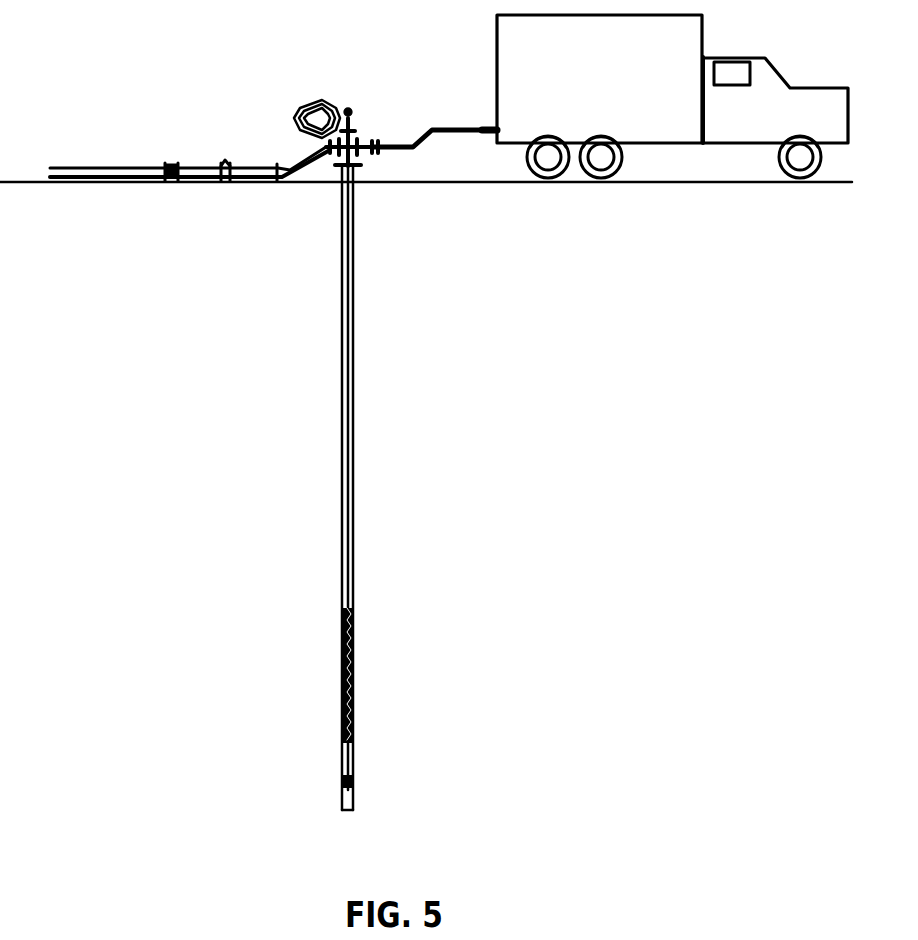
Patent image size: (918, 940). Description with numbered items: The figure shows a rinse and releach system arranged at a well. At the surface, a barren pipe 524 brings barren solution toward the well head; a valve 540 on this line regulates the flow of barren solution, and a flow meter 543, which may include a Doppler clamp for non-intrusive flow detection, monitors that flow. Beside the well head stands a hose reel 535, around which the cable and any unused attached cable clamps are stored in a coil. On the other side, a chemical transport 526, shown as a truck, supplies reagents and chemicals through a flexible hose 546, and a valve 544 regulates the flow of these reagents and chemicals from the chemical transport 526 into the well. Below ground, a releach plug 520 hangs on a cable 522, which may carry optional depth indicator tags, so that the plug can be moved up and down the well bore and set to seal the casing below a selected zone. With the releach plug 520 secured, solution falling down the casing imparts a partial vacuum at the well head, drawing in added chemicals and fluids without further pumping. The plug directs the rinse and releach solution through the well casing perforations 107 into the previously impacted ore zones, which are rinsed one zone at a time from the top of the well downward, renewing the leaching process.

The barren pipe 524 is at (98, 167).
The valve 540 is at (171, 167).
The flow meter 543 is at (225, 167).
The hose reel 535 is at (308, 100).
The valve 544 is at (362, 126).
The flexible hose 546 is at (438, 122).
The chemical transport 526 is at (647, 127).
The cable 522 is at (350, 440).
The well casing perforations 107 is at (355, 630).
The releach plug 520 is at (355, 778).